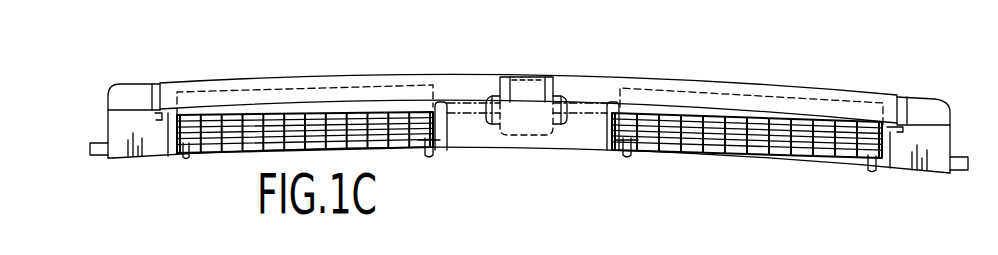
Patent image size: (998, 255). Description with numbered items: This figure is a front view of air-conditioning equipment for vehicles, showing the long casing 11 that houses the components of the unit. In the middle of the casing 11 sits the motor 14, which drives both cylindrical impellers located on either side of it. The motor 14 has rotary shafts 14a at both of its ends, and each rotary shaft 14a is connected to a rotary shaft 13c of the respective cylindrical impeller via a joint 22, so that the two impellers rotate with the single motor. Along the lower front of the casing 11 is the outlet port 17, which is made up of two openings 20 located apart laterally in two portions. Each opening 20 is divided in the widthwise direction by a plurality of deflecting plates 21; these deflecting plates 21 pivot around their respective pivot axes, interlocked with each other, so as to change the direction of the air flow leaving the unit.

The casing 11 is at (932, 112).
The rotary shaft 13c is at (444, 100).
The motor 14 is at (558, 98).
The rotary shaft 14a is at (489, 98).
The outlet port 17 is at (632, 183).
The opening 20 is at (403, 153).
The deflecting plate 21 is at (847, 150).
The joint 22 is at (463, 100).